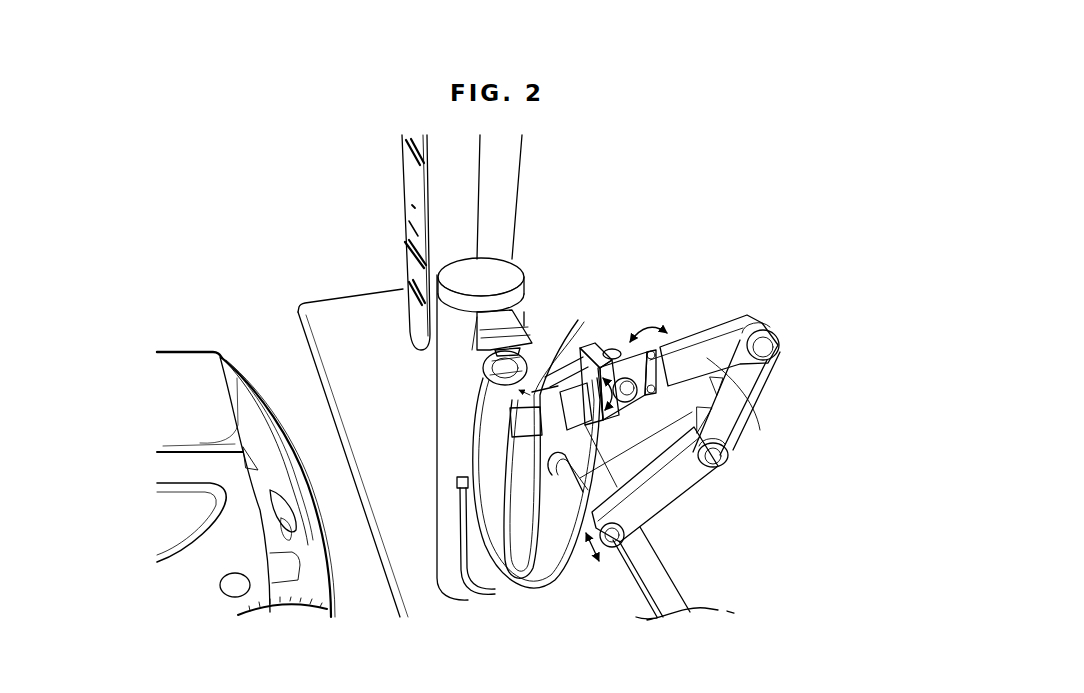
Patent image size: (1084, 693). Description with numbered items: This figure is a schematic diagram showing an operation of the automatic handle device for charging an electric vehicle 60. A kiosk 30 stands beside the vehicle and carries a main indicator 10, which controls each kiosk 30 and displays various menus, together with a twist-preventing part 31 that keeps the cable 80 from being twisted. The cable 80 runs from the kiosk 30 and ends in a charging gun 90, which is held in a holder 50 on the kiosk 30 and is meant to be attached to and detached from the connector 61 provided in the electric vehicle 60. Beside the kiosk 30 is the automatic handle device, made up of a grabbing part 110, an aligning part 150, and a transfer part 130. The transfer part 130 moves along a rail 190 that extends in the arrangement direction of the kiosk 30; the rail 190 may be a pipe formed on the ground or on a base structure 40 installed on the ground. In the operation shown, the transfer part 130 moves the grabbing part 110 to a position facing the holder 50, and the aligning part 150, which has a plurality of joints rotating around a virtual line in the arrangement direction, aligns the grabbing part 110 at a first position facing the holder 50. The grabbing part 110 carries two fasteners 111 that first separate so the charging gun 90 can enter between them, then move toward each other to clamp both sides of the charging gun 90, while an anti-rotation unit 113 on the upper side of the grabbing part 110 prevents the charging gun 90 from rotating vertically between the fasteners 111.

The main indicator 10 is at (442, 186).
The kiosk 30 is at (455, 385).
The twist-preventing part 31 is at (477, 317).
The base structure 40 is at (352, 313).
The holder 50 is at (506, 453).
The electric vehicle 60 is at (187, 387).
The connector 61 is at (235, 585).
The cable 80 is at (547, 582).
The charging gun 90 is at (545, 398).
The grabbing part 110 is at (604, 343).
The fastener 111 is at (585, 350).
The anti-rotation unit 113 is at (556, 335).
The transfer part 130 is at (605, 546).
The aligning part 150 is at (672, 487).
The rail 190 is at (653, 595).